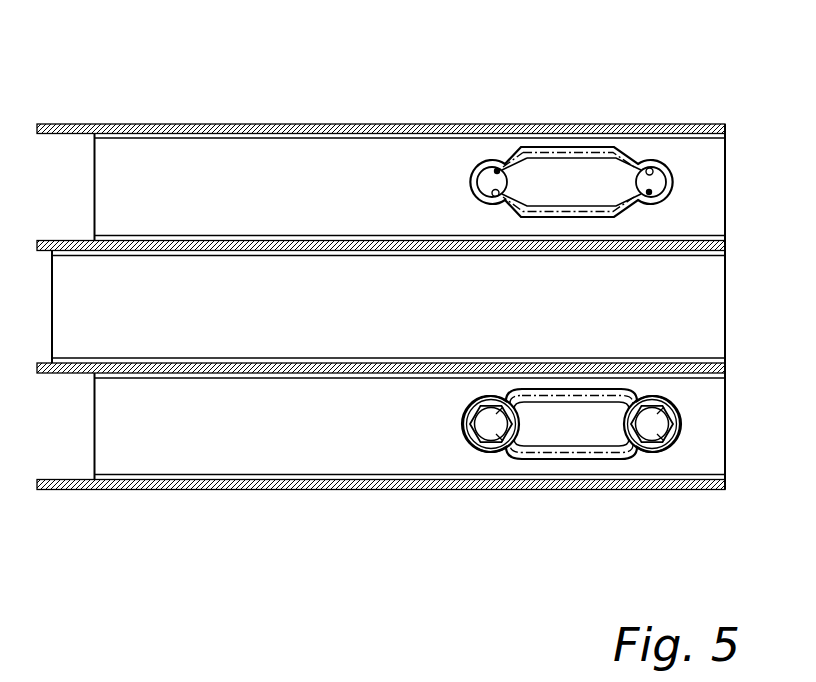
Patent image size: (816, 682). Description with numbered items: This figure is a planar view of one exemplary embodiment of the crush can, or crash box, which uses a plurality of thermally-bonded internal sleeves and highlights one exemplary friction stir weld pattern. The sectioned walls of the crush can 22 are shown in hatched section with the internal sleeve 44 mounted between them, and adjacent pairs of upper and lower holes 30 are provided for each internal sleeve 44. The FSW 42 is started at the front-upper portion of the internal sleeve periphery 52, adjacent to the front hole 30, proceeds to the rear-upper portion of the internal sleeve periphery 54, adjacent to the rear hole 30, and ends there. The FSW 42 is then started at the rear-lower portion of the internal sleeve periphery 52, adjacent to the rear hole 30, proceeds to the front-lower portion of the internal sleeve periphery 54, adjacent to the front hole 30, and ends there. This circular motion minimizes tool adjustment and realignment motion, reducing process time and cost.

The housing wall 22 is at (367, 123).
The hole 30 is at (488, 232).
The FSW 42 is at (630, 120).
The internal sleeve 44 is at (585, 487).
The front-upper portion of the internal sleeve periphery 52 is at (500, 138).
The rear-upper portion of the internal sleeve periphery 54 is at (672, 133).